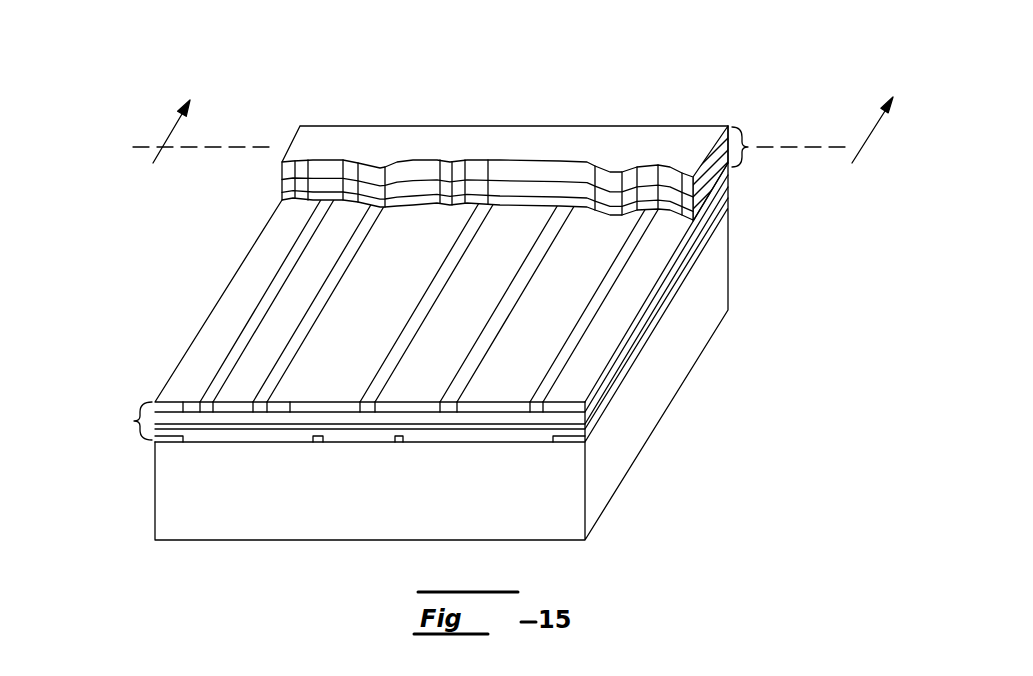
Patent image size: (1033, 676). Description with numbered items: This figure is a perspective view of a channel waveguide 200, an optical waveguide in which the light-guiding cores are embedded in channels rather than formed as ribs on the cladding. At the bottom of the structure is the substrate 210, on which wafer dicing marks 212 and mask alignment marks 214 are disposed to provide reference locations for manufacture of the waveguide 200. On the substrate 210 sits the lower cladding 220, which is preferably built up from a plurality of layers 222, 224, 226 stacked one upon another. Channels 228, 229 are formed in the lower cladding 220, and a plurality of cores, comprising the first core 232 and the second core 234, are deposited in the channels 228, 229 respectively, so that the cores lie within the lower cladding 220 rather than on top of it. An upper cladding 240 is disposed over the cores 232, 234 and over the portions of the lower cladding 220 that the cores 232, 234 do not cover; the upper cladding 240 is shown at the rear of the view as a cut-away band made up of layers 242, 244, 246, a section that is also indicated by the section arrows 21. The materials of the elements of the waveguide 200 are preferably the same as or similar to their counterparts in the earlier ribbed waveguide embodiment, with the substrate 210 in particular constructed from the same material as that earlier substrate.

The channel waveguide 200 is at (478, 74).
The substrate 210 is at (620, 486).
The wafer dicing marks 212 is at (153, 443).
The mask alignment marks 214 is at (305, 440).
The lower cladding 220 is at (134, 421).
The layer of the lower cladding 222 is at (607, 405).
The layer of the lower cladding 224 is at (627, 365).
The layer of the lower cladding 226 is at (729, 177).
The channel 228 is at (383, 406).
The channel 229 is at (200, 408).
The first core 232 is at (443, 278).
The second core 234 is at (268, 288).
The upper cladding 240 is at (557, 122).
The upper first layer 242 is at (672, 168).
The upper second layer 244 is at (698, 165).
The upper third layer 246 is at (718, 127).
The section line 21 is at (506, 130).